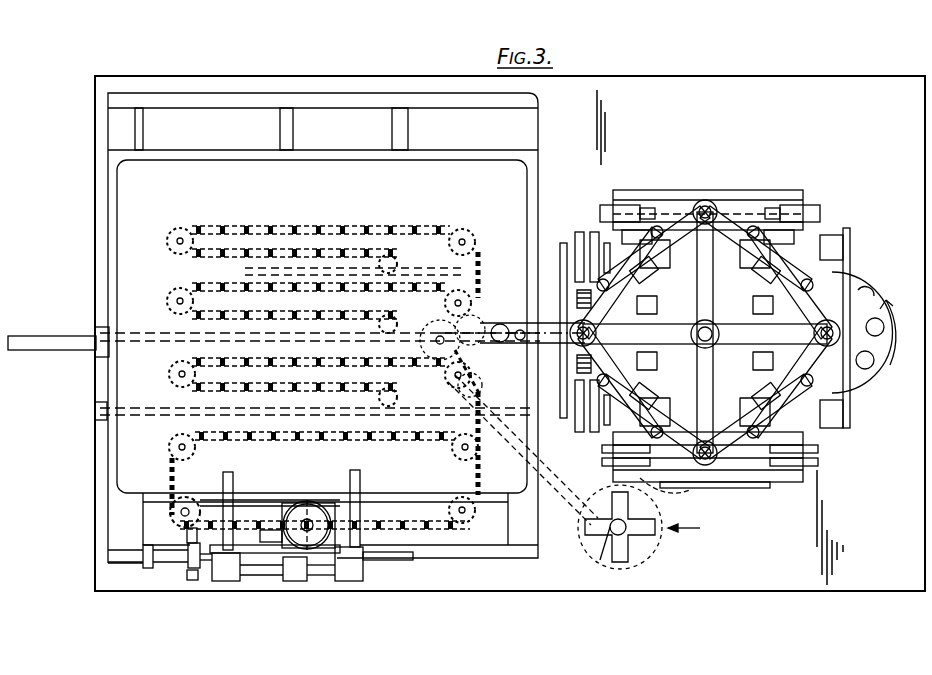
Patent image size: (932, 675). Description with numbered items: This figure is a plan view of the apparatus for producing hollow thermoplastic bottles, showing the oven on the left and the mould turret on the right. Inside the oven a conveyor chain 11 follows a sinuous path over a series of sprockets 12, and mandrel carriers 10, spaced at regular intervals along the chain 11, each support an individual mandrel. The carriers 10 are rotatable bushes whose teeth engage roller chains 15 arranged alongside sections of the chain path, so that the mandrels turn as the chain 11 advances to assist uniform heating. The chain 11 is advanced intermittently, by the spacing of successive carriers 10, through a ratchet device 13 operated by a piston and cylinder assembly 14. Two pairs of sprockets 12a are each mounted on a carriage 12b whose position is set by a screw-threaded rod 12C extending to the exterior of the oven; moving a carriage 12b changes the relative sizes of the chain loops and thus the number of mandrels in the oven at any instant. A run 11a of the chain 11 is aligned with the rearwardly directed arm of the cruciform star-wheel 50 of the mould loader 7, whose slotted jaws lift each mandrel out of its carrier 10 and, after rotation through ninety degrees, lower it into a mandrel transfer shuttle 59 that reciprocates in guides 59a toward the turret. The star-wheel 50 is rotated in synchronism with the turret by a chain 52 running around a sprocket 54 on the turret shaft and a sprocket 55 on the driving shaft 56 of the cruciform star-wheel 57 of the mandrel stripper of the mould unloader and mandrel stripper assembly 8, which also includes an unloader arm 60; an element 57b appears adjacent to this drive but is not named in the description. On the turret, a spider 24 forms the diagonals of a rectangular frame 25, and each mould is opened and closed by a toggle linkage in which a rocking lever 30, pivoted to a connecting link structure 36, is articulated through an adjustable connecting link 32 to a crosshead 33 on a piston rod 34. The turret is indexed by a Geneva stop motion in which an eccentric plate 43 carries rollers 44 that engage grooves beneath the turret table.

The mould loader 7 is at (532, 318).
The mould unloader and mandrel stripper assembly 8 is at (691, 530).
The mandrel carriers 10 is at (420, 528).
The chain 11 is at (297, 222).
The run of the chain 11a is at (484, 268).
The sprockets 12 is at (193, 228).
The pairs of sprockets 12a is at (428, 352).
The carriage 12b is at (455, 322).
The screw-threaded rod 12C is at (150, 335).
The ratchet device 13 is at (305, 500).
The piston and cylinder assembly 14 is at (172, 552).
The roller chains 15 is at (384, 258).
The spider 24 is at (740, 322).
The rectangular frame 25 is at (780, 265).
The rocking lever 30 is at (803, 208).
The adjustable connecting link 32 is at (762, 205).
The crosshead 33 is at (720, 200).
The piston rod 34 is at (700, 200).
The connecting link structure 36 is at (775, 478).
The eccentric plate 43 is at (870, 310).
The rollers 44 is at (860, 300).
The cruciform star-wheel 50 is at (523, 450).
The chain 52 is at (545, 488).
The sprocket 54 is at (722, 330).
The sprocket 55 is at (648, 548).
The driving shaft 56 is at (608, 535).
The cruciform star-wheel 57 is at (612, 536).
The shaft 57b is at (80, 340).
The mandrel transfer shuttle 59 is at (505, 345).
The guides 59a is at (535, 347).
The unloader arm 60 is at (670, 488).